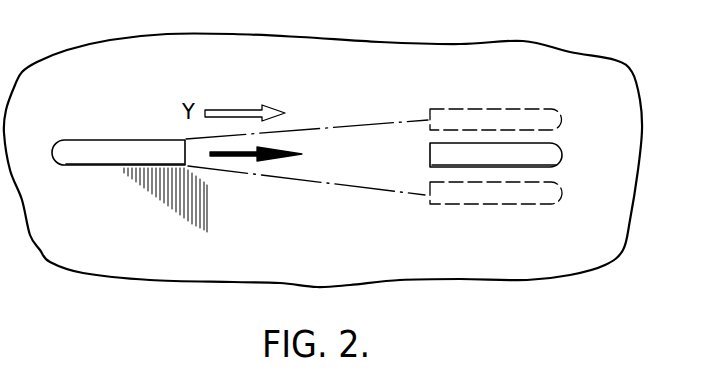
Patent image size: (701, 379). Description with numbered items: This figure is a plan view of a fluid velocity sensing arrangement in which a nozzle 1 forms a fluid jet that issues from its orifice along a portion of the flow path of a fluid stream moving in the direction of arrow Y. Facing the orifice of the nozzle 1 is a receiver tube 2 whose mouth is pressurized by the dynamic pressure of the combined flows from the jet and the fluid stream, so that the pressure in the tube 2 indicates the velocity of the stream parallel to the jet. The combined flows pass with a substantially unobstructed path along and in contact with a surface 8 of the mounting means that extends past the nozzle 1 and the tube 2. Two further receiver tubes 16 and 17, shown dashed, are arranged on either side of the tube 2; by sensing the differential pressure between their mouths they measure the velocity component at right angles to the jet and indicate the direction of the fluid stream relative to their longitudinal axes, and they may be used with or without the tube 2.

The nozzle 1 is at (108, 142).
The tube 2 is at (557, 153).
The surface 8 is at (331, 240).
The receiver tube 16 is at (498, 108).
The receiver tube 17 is at (533, 197).